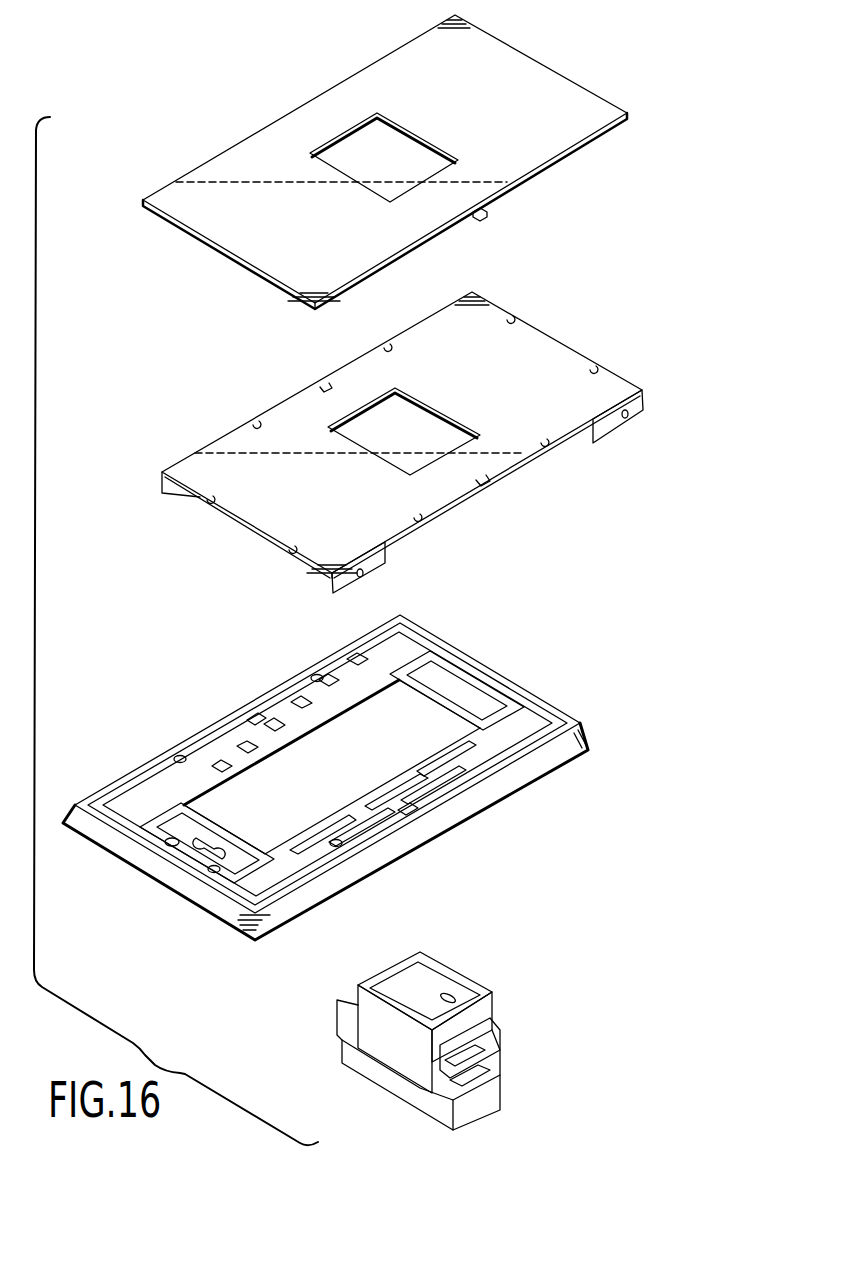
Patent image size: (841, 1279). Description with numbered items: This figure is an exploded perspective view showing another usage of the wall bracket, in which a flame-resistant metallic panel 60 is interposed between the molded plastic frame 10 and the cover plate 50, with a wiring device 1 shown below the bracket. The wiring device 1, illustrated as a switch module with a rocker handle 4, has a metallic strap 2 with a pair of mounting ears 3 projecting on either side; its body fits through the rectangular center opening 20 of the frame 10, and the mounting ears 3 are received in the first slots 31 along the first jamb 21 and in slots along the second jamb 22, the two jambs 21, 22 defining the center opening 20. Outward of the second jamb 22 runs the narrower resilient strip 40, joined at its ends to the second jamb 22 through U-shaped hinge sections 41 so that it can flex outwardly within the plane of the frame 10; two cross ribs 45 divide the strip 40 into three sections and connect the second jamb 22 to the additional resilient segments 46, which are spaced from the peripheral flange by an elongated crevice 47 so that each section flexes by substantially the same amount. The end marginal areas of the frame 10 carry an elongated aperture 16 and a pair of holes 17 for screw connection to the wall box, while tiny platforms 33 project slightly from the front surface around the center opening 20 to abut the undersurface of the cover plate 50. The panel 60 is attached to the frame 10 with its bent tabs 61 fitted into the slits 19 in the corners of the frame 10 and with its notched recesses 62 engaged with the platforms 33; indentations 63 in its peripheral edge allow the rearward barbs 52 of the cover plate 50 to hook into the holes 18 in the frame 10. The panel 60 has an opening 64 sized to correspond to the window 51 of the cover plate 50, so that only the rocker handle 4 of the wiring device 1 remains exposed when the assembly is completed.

The wiring device 1 is at (493, 993).
The metallic strap 2 is at (500, 1035).
The mounting ears 3 is at (500, 1067).
The rocker handle 4 is at (432, 977).
The frame 10 is at (503, 672).
The elongated aperture 16 is at (207, 850).
The holes 17 is at (168, 853).
The holes 18 is at (255, 716).
The slits 19 is at (372, 648).
The center opening 20 is at (237, 828).
The first jamb 21 is at (275, 735).
The second jamb 22 is at (377, 798).
The first slots 31 is at (247, 715).
The platforms 33 is at (317, 675).
The resilient strip 40 is at (322, 862).
The U-shaped hinge sections 41 is at (500, 730).
The cross ribs 45 is at (357, 823).
The additional resilient segment 46 is at (437, 777).
The elongated crevice 47 is at (437, 790).
The cover plate 50 is at (145, 202).
The window 51 is at (327, 152).
The barbs 52 is at (488, 217).
The flame-resistant panel 60 is at (648, 388).
The bent tabs 61 is at (608, 425).
The notched recesses 62 is at (387, 343).
The indentations 63 is at (322, 383).
The opening 64 is at (370, 458).